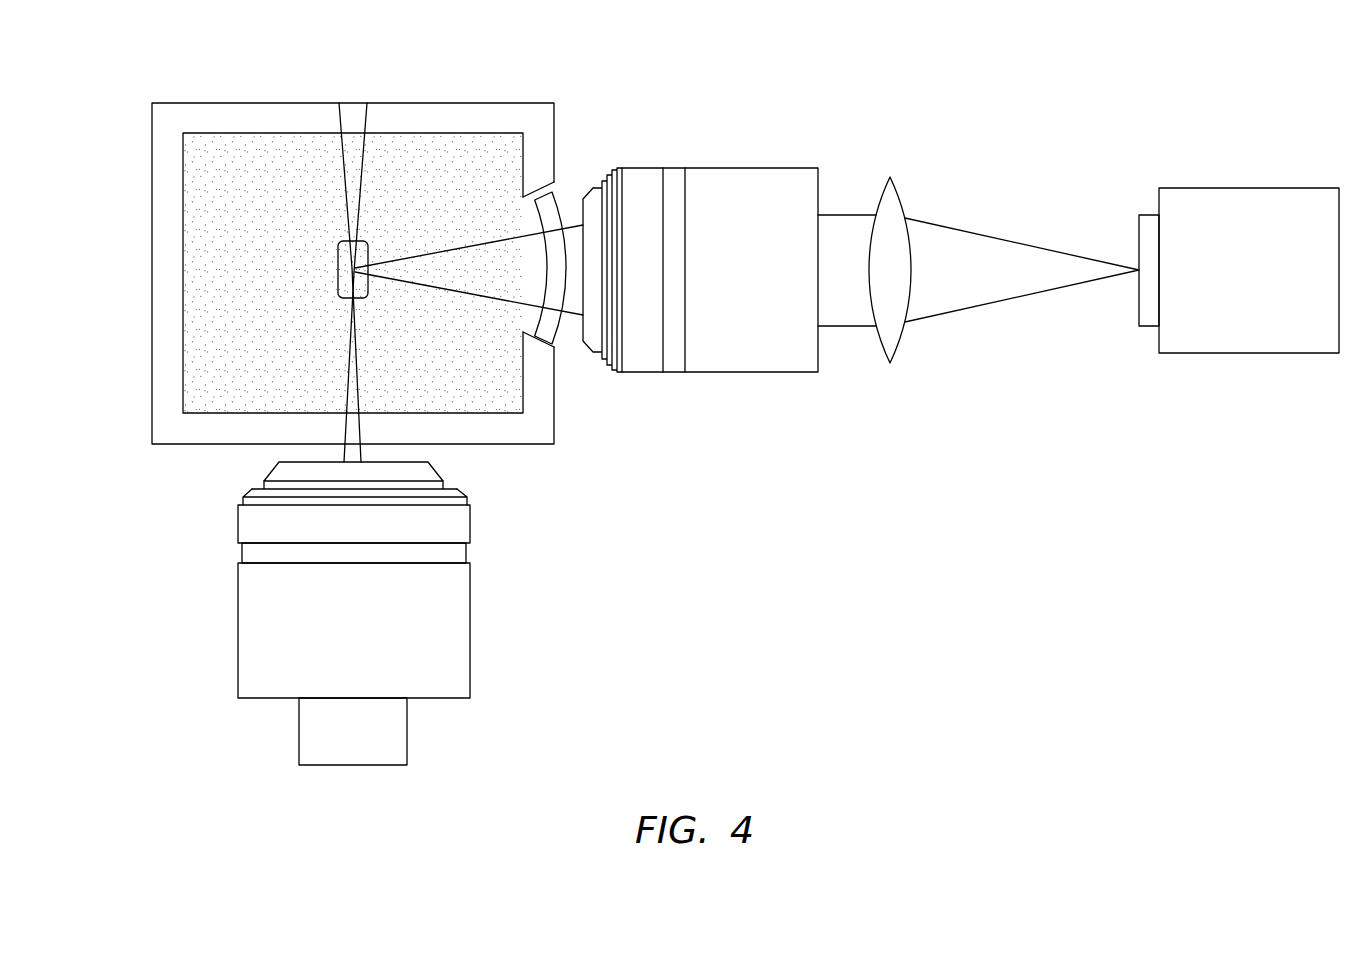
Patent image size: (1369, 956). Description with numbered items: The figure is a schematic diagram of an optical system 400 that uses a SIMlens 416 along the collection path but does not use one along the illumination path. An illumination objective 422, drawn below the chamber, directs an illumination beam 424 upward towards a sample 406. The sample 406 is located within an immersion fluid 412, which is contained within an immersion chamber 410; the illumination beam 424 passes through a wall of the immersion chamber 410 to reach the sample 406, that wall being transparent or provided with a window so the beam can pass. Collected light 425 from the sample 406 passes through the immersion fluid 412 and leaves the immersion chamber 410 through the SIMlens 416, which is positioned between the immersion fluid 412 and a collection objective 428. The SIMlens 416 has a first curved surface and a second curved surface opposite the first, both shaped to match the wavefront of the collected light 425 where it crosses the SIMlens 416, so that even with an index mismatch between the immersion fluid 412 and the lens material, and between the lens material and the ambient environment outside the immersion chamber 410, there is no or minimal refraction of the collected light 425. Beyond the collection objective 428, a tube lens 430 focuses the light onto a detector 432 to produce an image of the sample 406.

The optical system 400 is at (1193, 68).
The sample 406 is at (343, 273).
The immersion chamber 410 is at (223, 103).
The immersion fluid 412 is at (212, 298).
The SIMlens 416 is at (547, 212).
The illumination objective 422 is at (237, 592).
The illumination beam 424 is at (352, 363).
The collected light 425 is at (470, 272).
The collection objective 428 is at (752, 168).
The tube lens 430 is at (890, 178).
The detector 432 is at (1248, 188).